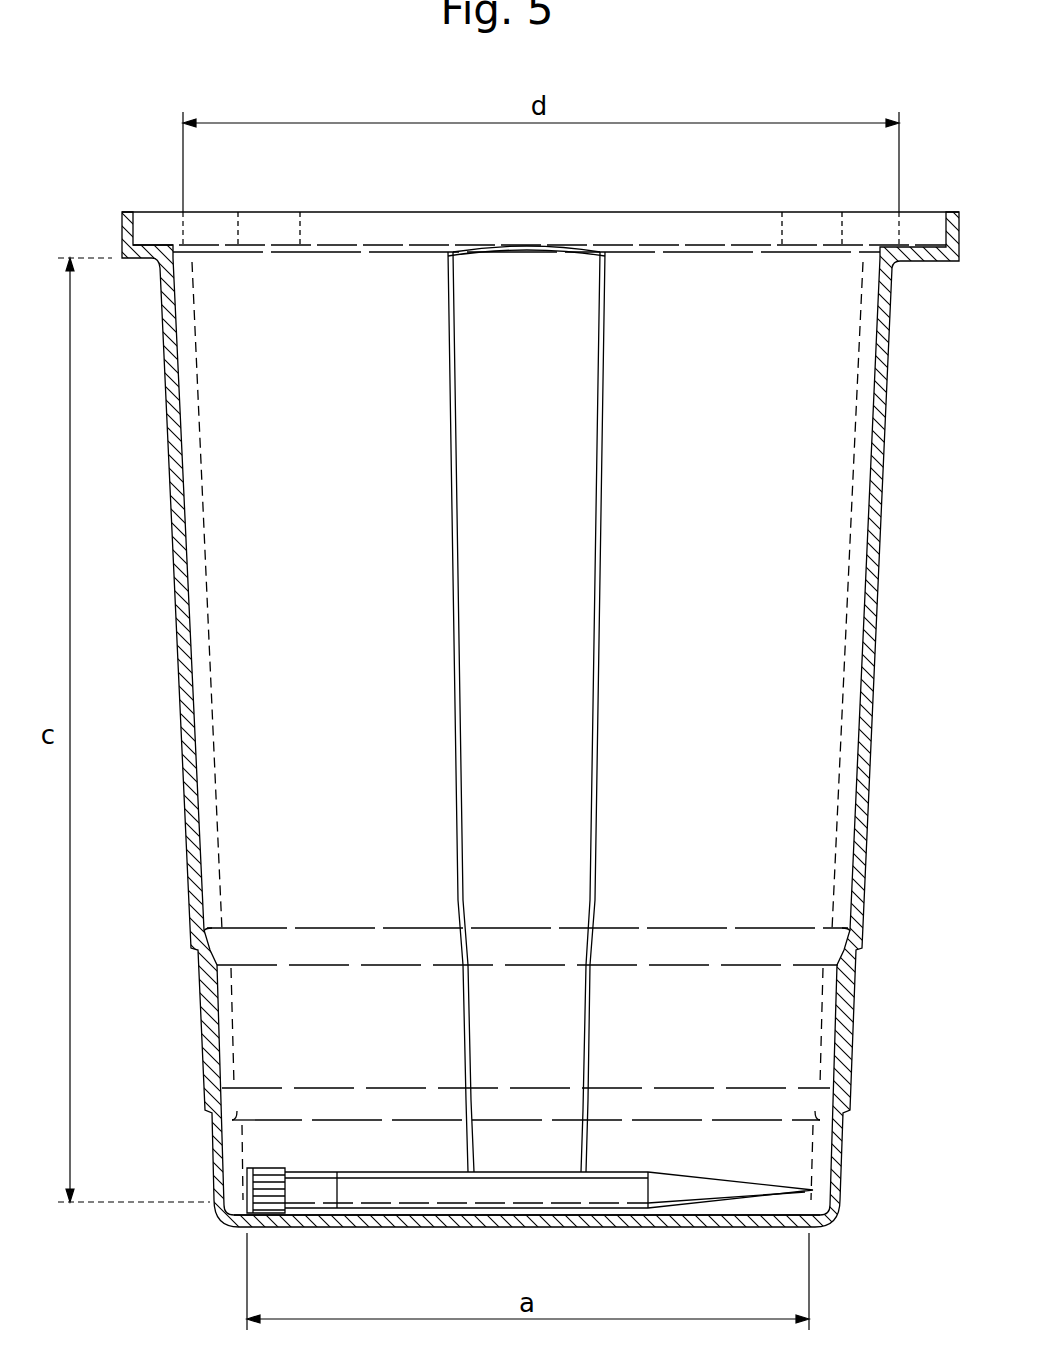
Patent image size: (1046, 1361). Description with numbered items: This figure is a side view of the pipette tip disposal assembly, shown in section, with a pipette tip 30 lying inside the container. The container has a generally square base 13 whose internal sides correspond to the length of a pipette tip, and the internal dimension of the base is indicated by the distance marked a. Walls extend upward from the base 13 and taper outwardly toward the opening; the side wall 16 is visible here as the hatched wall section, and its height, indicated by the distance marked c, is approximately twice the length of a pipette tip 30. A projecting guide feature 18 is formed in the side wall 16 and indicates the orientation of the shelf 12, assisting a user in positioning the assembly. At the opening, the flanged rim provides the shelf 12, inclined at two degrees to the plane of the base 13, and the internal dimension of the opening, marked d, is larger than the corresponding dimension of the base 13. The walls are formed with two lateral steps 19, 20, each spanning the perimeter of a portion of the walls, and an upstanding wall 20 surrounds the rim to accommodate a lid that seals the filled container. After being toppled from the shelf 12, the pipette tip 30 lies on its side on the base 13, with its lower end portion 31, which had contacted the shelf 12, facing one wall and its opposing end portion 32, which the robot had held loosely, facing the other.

The shelf 12 is at (913, 248).
The base 13 is at (640, 1228).
The side wall 16 is at (818, 622).
The projecting guide feature 18 is at (560, 530).
The lateral step 19 is at (857, 963).
The upstanding wall 20 is at (376, 228).
The pipette tip 30 is at (455, 1190).
The lower end portion 31 is at (738, 1190).
The opposing end portion 32 is at (310, 1195).